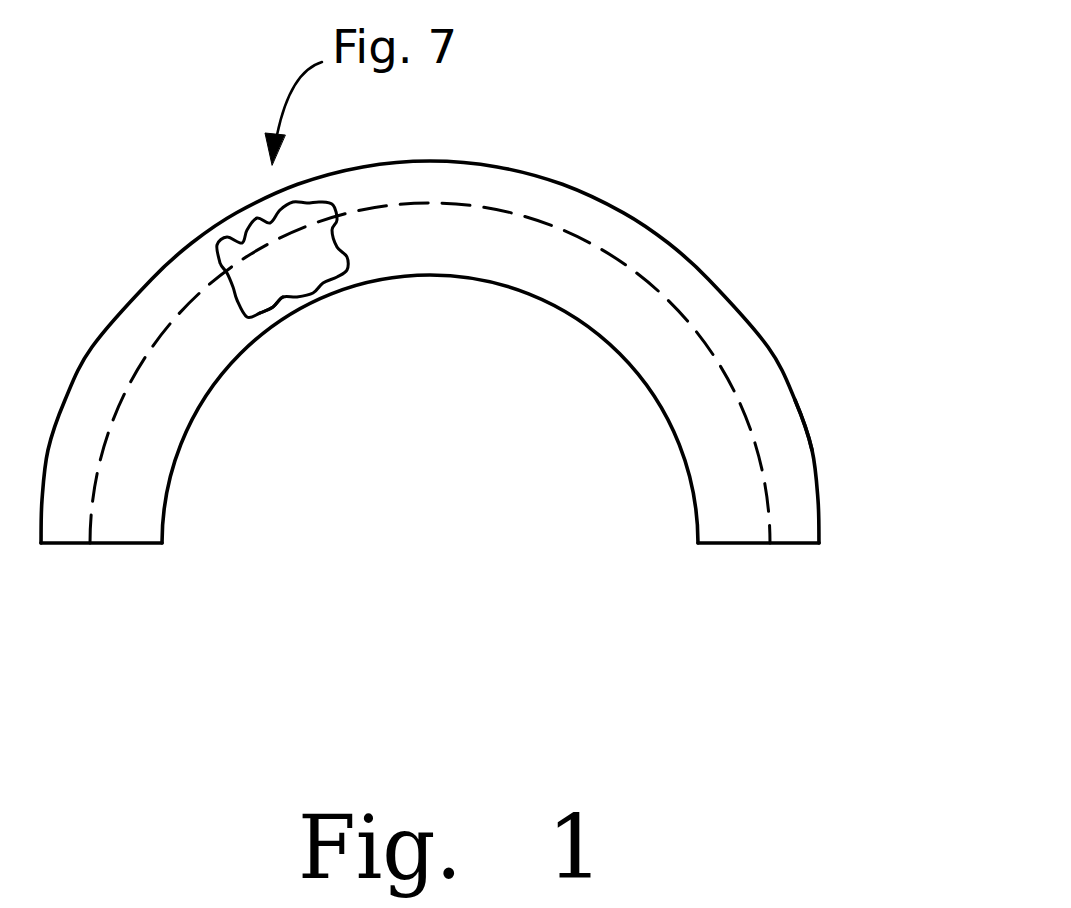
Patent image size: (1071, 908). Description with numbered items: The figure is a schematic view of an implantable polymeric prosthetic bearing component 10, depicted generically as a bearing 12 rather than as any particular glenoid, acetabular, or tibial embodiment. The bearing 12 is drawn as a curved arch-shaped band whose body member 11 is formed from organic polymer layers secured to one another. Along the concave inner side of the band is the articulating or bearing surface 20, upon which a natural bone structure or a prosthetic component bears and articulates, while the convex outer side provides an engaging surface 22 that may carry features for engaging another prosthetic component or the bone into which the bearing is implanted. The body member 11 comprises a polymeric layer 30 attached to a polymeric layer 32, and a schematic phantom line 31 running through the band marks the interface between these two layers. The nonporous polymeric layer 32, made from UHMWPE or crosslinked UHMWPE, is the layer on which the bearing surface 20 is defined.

The implantable polymeric prosthetic bearing component 10 is at (761, 147).
The body member 11 is at (565, 156).
The bearing 12 is at (764, 283).
The articulating or bearing surface 20 is at (672, 431).
The engaging surface 22 is at (798, 408).
The polymeric layer 30 is at (237, 252).
The phantom line 31 is at (147, 355).
The polymeric layer 32 is at (257, 292).